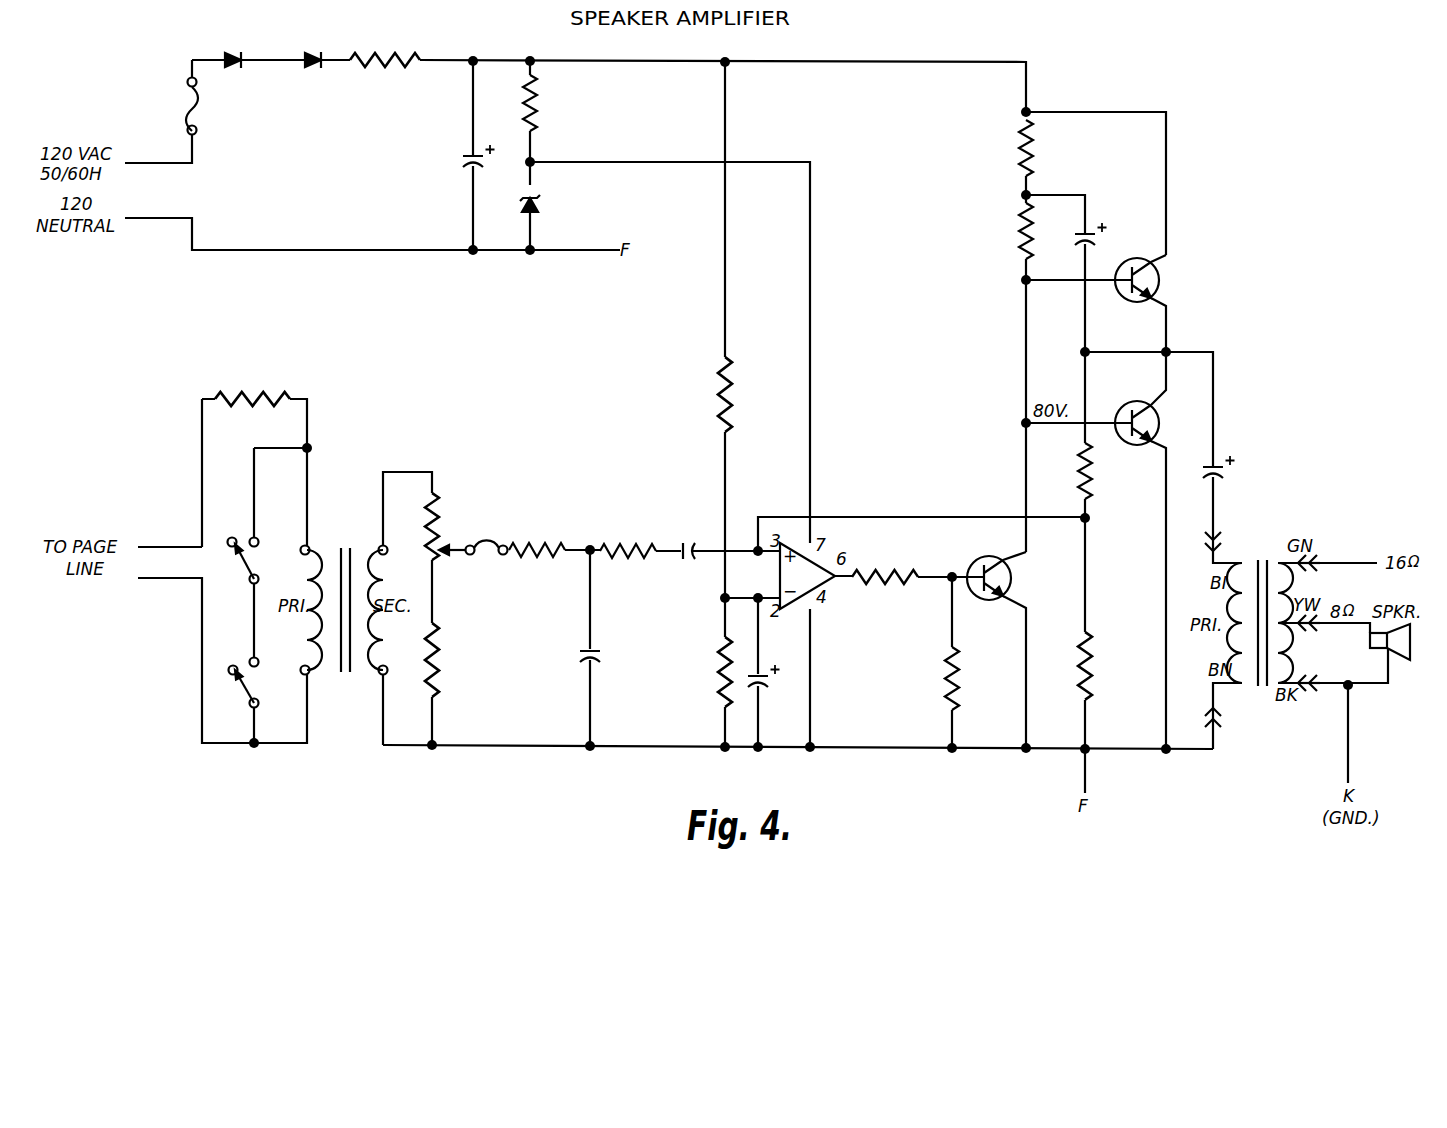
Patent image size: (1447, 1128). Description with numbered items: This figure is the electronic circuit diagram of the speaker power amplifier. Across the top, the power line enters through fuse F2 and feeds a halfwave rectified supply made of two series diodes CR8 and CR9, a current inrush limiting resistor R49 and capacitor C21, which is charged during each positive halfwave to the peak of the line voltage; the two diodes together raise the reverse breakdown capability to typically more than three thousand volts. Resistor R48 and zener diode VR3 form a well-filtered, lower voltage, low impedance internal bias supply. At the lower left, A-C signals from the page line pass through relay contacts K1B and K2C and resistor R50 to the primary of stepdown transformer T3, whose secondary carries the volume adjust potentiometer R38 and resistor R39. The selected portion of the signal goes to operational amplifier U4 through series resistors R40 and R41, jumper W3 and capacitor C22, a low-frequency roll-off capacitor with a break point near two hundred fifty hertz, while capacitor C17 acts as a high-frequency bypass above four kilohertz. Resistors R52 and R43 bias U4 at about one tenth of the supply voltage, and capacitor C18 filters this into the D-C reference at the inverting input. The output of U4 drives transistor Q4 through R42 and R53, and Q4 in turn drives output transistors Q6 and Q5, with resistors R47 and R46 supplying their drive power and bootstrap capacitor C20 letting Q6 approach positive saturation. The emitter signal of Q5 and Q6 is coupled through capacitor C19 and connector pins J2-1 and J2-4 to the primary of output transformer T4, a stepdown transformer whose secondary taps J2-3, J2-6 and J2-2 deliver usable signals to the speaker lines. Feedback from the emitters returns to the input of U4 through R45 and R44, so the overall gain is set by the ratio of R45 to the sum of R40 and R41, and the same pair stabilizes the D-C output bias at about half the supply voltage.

The fuse 0.7A F2 is at (167, 106).
The diode CR8 is at (231, 47).
The diode CR9 is at (311, 47).
The current in rush limiting resistor R49 is at (385, 46).
The capacitor C21 is at (461, 158).
The resistor R48 is at (550, 103).
The zener diode VR3 is at (550, 201).
The resistor R52 is at (744, 394).
The resistor R47 is at (996, 148).
The resistor R46 is at (999, 231).
The bootstrap capacitor C20 is at (1104, 235).
The output transistor Q6 is at (1137, 292).
The output transistor Q5 is at (1137, 435).
The resistor R45 is at (1104, 471).
The capacitor C19 is at (1233, 470).
The resistor R44 is at (1105, 666).
The transistor Q4 is at (989, 567).
The resistor R42 is at (885, 566).
The resistor R53 is at (972, 678).
The operational amplifier U4 is at (807, 576).
The capacitor C18 is at (777, 679).
The resistor R43 is at (699, 672).
The low-frequency roll-off capacitor C22 is at (691, 537).
The series resistor R41 is at (628, 537).
The series resistor R40 is at (537, 536).
The jumper W3 is at (487, 563).
The high-frequency bypass capacitor C17 is at (609, 656).
The volume adjust potentiometer R38 is at (452, 526).
The resistor R39 is at (450, 660).
The resistor R50 is at (252, 388).
The relay contact K1B is at (262, 561).
The relay contact K2C is at (262, 683).
The stepdown transformer T3 is at (344, 600).
The output transformer T4 is at (1260, 612).
The connector pin J2-1 is at (1195, 539).
The connector pin J2-4 is at (1232, 716).
The connector pin J2-3 is at (1323, 577).
The connector pin J2-6 is at (1324, 638).
The connector pin J2-2 is at (1321, 699).